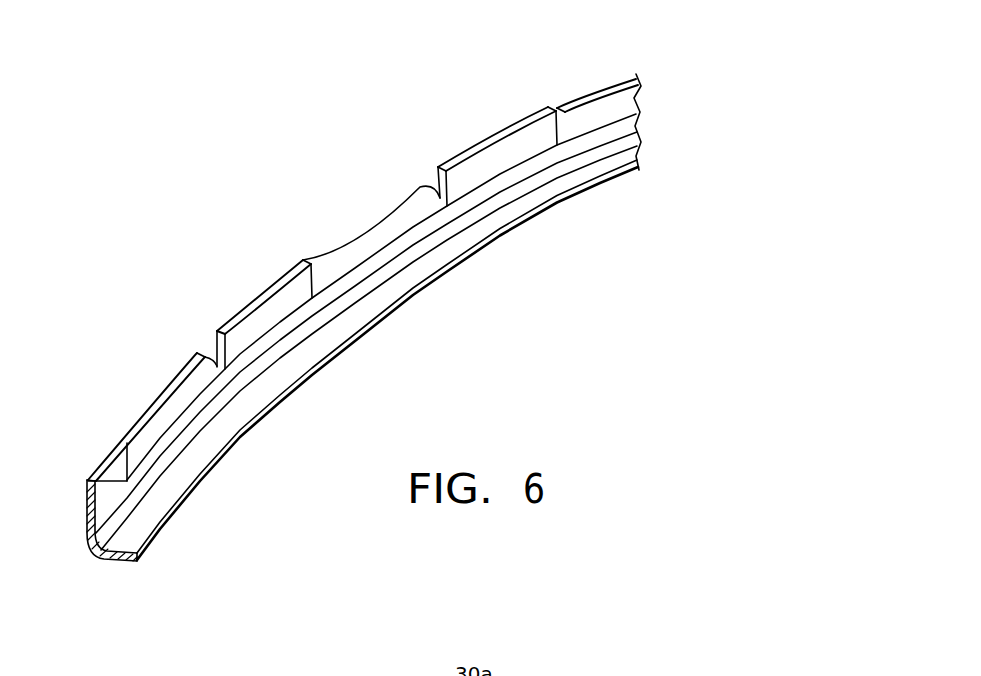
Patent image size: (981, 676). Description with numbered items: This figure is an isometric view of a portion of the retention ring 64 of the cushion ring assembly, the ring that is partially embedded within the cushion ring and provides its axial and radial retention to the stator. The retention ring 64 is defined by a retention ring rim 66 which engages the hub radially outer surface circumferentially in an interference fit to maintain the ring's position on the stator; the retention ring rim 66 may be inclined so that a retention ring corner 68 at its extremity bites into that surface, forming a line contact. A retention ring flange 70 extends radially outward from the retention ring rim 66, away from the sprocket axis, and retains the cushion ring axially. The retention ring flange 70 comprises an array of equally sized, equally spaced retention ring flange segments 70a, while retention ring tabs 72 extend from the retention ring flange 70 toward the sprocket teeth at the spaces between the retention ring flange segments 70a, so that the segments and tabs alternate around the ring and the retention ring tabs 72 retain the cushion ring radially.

The retention ring 64 is at (355, 340).
The retention ring rim 66 is at (170, 496).
The retention ring corner 68 is at (134, 565).
The retention ring flange 70 is at (117, 504).
The retention ring flange segments 70a is at (112, 448).
The retention ring tabs 72 is at (165, 395).